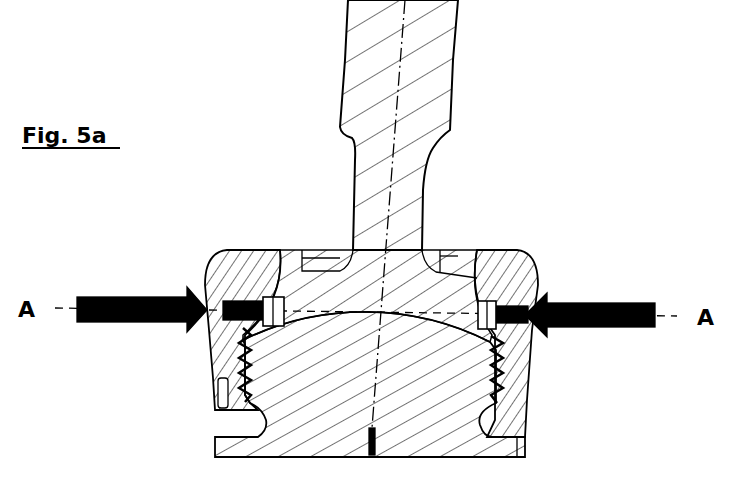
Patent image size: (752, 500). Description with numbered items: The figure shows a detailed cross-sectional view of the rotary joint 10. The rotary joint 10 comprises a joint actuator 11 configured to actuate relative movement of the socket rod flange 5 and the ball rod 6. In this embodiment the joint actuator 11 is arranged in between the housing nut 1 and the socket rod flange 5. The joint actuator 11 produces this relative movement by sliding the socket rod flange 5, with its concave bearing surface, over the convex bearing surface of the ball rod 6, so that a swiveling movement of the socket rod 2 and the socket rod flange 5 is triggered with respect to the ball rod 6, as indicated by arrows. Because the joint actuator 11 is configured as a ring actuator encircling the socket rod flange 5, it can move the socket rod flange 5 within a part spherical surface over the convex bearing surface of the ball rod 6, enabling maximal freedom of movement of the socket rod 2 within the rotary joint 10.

The rotary joint 10 is at (262, 90).
The socket rod 2 is at (428, 170).
The housing nut 1 is at (532, 263).
The socket rod flange 5 is at (458, 288).
The ball rod 6 is at (487, 423).
The joint actuator 11 is at (250, 249).